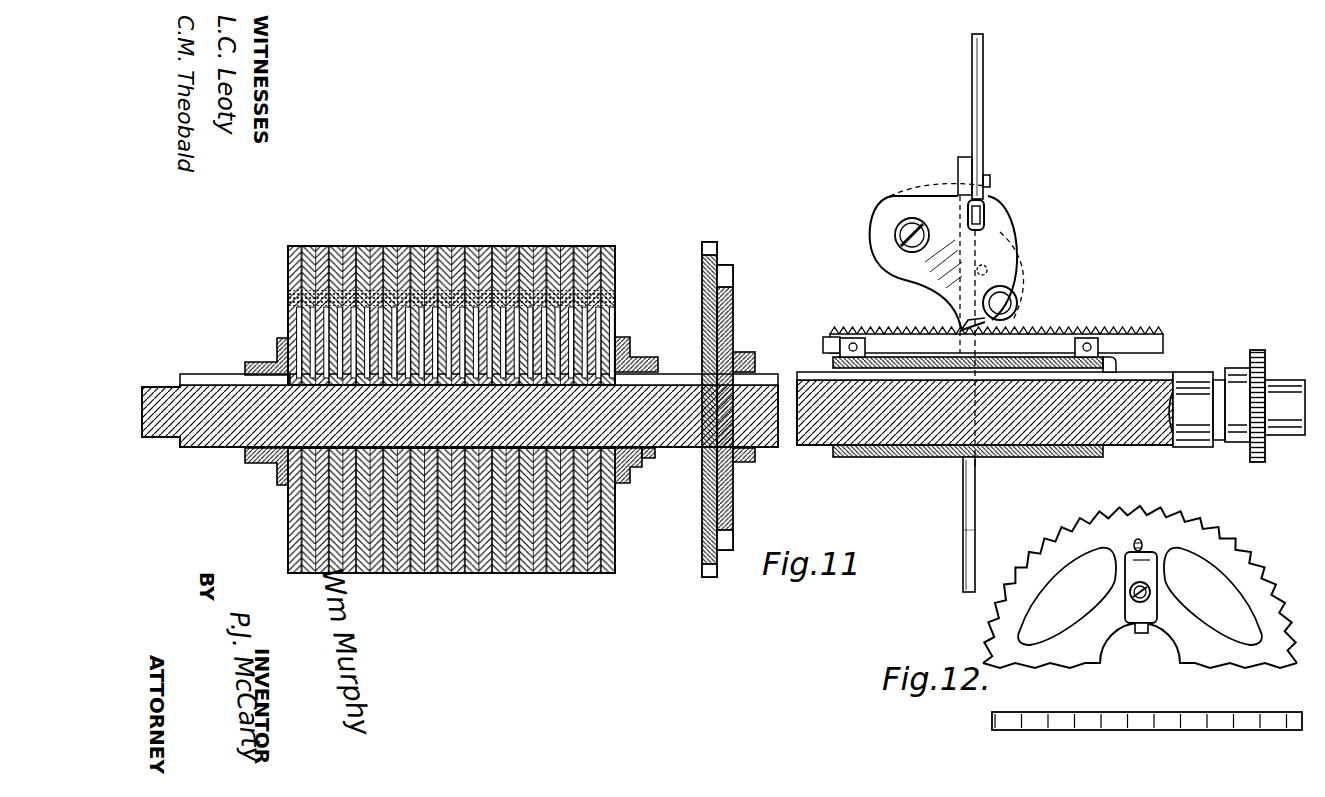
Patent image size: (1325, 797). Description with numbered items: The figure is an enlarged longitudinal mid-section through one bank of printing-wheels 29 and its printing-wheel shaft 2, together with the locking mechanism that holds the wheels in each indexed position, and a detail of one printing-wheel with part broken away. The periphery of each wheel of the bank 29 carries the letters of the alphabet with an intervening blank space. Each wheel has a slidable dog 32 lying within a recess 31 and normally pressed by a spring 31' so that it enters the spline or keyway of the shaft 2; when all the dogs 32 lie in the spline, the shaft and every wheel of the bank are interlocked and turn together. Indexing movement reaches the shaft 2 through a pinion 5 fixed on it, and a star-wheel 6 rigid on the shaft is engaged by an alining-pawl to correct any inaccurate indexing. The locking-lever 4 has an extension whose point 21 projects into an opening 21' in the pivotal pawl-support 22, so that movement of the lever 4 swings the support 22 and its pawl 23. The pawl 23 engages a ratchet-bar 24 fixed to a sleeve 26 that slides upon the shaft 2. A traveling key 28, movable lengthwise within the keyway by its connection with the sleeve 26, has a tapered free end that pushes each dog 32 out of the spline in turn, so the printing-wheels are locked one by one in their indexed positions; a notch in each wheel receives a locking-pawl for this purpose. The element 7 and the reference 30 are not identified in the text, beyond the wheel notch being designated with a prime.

In FIG. 11, the printing-wheel shaft 2 is at (1145, 447).
In FIG. 11, the locking-lever 4 is at (984, 139).
In FIG. 11, the pinion 5 is at (1252, 456).
In FIG. 11, the star-wheel 6 is at (735, 532).
In FIG. 11, the flange 7 is at (702, 551).
In FIG. 11, the point 21 is at (1010, 204).
In FIG. 11, the opening 21' is at (1020, 221).
In FIG. 11, the pivotal pawl-support 22 is at (947, 268).
In FIG. 11, the pawl 23 is at (962, 326).
In FIG. 11, the ratchet-bar 24 is at (1042, 346).
In FIG. 11, the sleeve 26 is at (950, 453).
In FIG. 11, the traveling key 28 is at (760, 373).
In FIG. 11, the bank of printing-wheels 29 is at (566, 574).
In FIG. 12, the bank of printing-wheels 29 is at (1160, 712).
In FIG. 12, the toothed disc 30 is at (1256, 550).
In FIG. 12, the recess 31 is at (1170, 564).
In FIG. 11, the spring 31' is at (449, 273).
In FIG. 12, the spring 31' is at (1164, 536).
In FIG. 11, the slidable dog 32 is at (300, 323).
In FIG. 12, the slidable dog 32 is at (1128, 610).